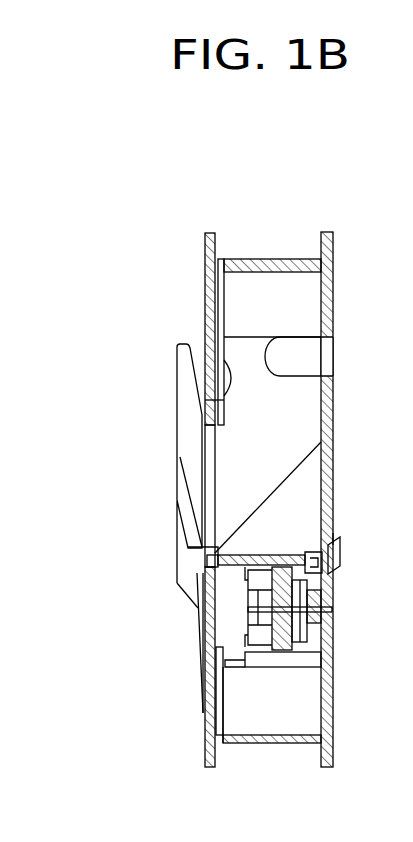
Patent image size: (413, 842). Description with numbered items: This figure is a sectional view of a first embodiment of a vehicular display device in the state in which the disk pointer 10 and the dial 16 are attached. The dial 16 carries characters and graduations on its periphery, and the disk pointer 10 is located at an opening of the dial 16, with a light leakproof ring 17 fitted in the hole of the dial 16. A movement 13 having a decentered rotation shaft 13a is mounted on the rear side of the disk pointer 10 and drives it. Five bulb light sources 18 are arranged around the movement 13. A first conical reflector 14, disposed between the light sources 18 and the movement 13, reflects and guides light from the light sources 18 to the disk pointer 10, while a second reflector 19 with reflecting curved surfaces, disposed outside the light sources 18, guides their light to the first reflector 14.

The disk pointer 10 is at (172, 460).
The movement 13 is at (268, 680).
The decentered rotation shaft 13a is at (213, 567).
The first conical reflector 14 is at (303, 482).
The dial 16 is at (205, 283).
The light leakproof ring 17 is at (228, 362).
The bulb light sources 18 is at (307, 352).
The second reflector 19 is at (268, 280).